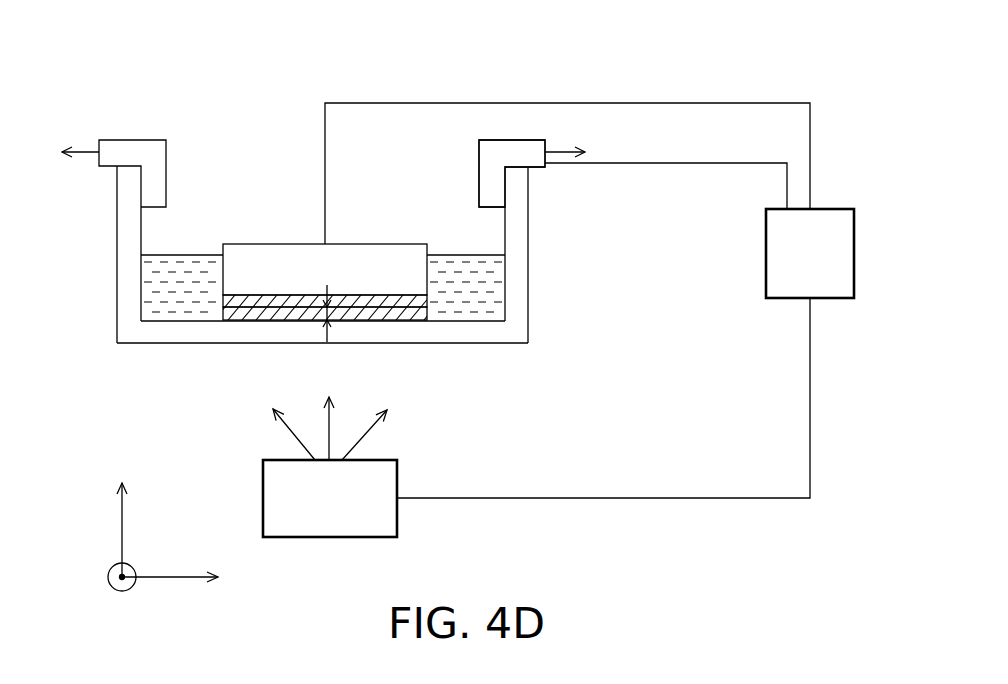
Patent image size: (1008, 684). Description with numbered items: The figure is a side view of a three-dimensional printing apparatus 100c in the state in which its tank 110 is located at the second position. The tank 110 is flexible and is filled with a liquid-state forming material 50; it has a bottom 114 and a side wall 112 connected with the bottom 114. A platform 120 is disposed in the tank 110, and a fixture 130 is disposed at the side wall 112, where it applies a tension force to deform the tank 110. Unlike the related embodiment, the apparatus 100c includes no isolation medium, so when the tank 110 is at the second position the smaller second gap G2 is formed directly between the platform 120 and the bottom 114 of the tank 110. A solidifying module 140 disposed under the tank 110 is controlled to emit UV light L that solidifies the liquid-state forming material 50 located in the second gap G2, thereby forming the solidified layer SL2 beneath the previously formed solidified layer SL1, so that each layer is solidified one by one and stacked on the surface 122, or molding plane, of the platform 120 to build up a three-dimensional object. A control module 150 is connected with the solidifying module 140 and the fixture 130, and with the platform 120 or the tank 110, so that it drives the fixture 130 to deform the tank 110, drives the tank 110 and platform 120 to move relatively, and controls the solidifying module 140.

The 3-D printing apparatus 100c is at (845, 583).
The tank 110 is at (221, 10).
The side wall 112 is at (520, 270).
The bottom 114 is at (473, 333).
The platform 120 is at (260, 252).
The surface 122 is at (400, 298).
The fixture 130 is at (518, 148).
The solidifying module 140 is at (330, 538).
The control module 150 is at (832, 300).
The liquid-state forming material 50 is at (157, 302).
The second gap G2 is at (327, 312).
The solidified layer SL1 is at (238, 321).
The solidified layer SL2 is at (300, 313).
The UV light L is at (372, 429).